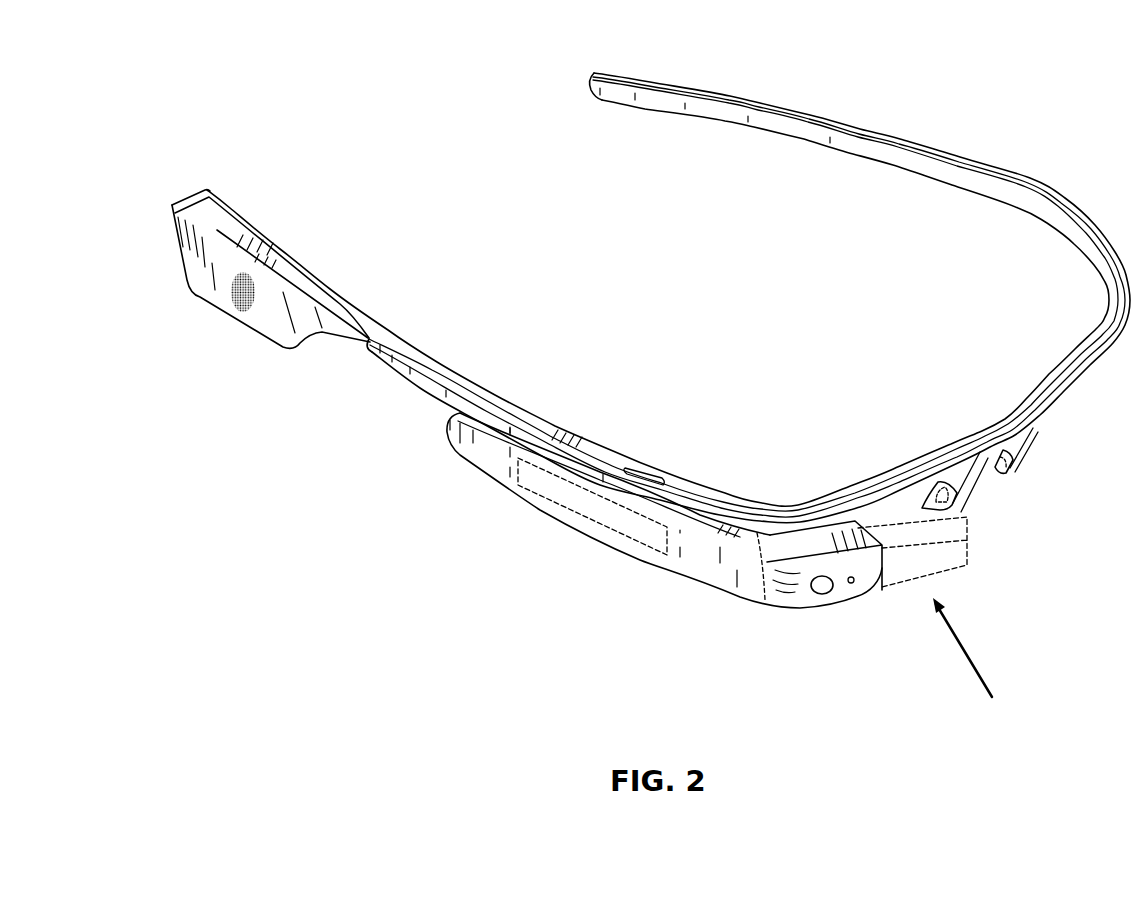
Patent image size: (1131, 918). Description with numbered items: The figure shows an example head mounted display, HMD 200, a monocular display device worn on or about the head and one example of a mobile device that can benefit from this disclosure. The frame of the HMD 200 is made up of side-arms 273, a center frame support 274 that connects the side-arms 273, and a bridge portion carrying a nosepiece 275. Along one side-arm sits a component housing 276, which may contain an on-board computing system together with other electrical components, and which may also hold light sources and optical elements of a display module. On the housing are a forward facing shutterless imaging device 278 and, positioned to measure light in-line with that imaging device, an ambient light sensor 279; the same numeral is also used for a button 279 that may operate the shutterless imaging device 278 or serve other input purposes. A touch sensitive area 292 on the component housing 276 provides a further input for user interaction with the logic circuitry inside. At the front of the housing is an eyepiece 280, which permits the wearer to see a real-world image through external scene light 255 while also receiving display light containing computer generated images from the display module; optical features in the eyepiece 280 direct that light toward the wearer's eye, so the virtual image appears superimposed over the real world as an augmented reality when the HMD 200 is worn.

The head mounted display 200 is at (975, 97).
The external scene light 255 is at (982, 680).
The side-arms 273 is at (770, 108).
The center frame support 274 is at (983, 434).
The nosepiece 275 is at (1030, 450).
The component housing 276 is at (567, 518).
The shutterless imaging device 278 is at (822, 594).
The ambient light sensor / button 279 is at (632, 466).
The eyepiece 280 is at (958, 567).
The touch sensitive area 292 is at (627, 522).